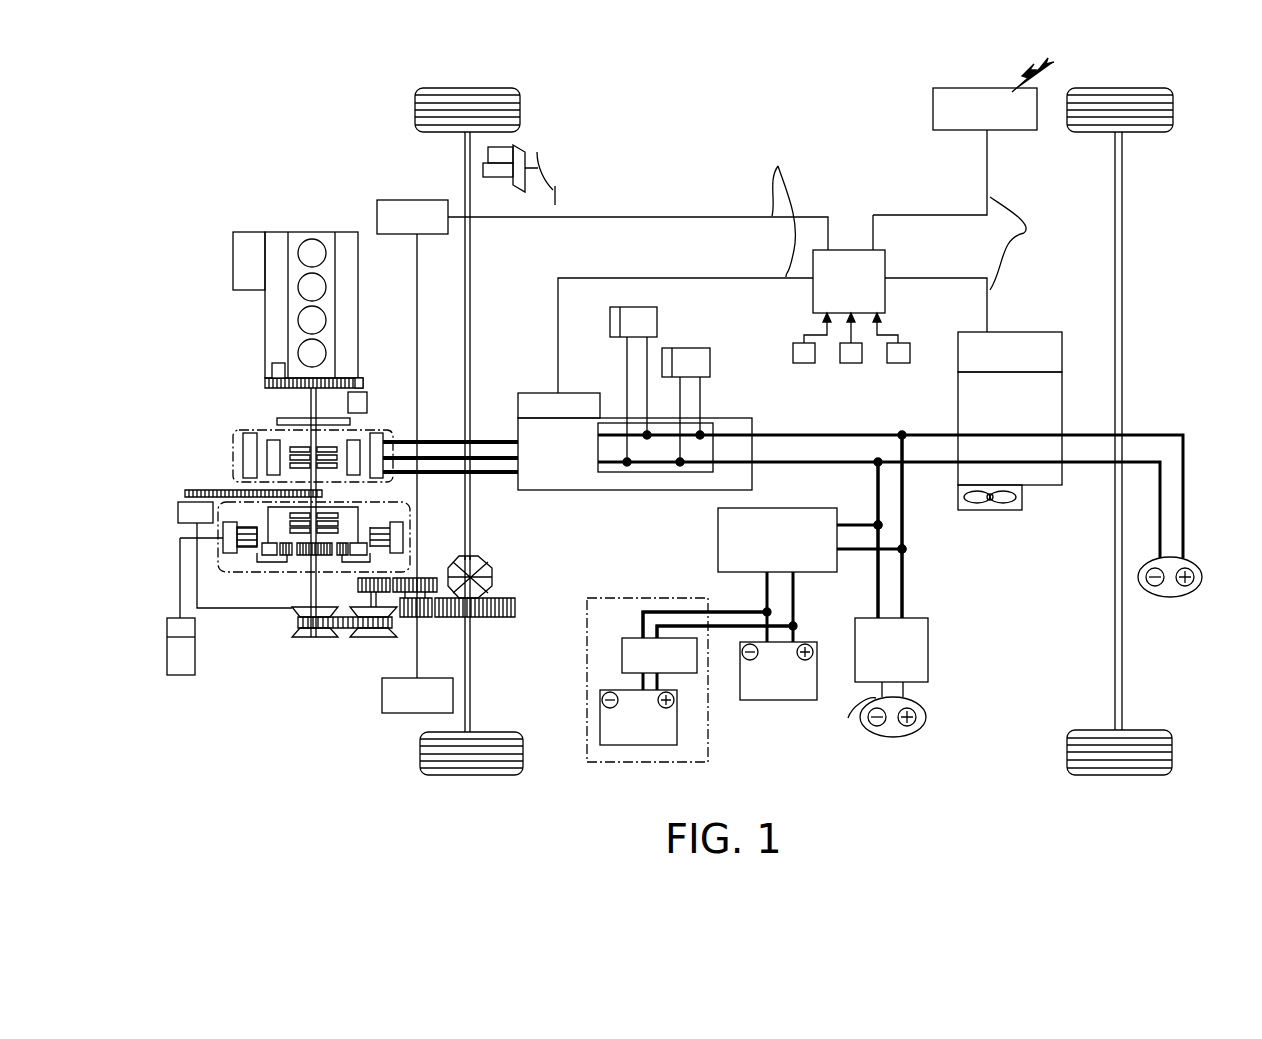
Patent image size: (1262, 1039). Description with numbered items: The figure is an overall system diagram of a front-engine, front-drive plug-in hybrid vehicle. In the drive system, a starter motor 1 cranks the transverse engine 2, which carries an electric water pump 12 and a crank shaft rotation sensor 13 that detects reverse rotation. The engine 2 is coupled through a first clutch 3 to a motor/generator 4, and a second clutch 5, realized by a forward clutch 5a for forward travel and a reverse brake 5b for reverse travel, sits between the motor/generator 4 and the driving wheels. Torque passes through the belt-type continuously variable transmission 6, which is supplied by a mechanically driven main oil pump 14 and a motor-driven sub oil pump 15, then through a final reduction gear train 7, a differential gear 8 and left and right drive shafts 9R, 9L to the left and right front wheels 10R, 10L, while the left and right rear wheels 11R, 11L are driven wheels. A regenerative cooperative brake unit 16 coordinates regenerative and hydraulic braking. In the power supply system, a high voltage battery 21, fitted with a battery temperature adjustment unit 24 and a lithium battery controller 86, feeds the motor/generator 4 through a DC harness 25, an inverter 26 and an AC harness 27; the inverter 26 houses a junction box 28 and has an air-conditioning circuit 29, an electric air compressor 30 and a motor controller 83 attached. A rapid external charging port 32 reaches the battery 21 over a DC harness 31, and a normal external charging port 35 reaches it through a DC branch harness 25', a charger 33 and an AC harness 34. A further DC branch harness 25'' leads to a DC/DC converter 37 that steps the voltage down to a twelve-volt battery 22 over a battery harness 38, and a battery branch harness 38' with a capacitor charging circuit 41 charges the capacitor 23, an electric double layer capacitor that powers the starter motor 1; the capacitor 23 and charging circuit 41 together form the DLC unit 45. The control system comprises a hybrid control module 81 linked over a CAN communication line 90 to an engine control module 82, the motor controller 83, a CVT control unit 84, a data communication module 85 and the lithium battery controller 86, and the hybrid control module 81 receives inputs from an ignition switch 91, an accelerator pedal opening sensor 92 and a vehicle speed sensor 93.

The starter motor 1 is at (365, 405).
The transverse engine 2 is at (330, 238).
The first clutch 3 is at (300, 455).
The motor/generator 4 is at (250, 455).
The second clutch 5 is at (230, 562).
The forward clutch 5a is at (330, 520).
The reverse brake 5b is at (247, 547).
The belt-type continuously variable transmission 6 is at (313, 630).
The final reduction gear train 7 is at (430, 615).
The differential gear 8 is at (480, 577).
The right drive shaft 9R is at (470, 252).
The left drive shaft 9L is at (470, 690).
The right front wheel 10R is at (415, 110).
The left front wheel 10L is at (420, 750).
The right rear wheel 11R is at (1173, 112).
The left rear wheel 11L is at (1172, 752).
The electric water pump 12 is at (240, 243).
The crank shaft rotation sensor 13 is at (272, 370).
The main oil pump 14 is at (190, 513).
The sub oil pump 15 is at (183, 655).
The regenerative cooperative brake unit 16 is at (518, 152).
The high voltage battery 21 is at (1052, 392).
The 12V battery 22 is at (752, 688).
The capacitor 23 is at (657, 735).
The battery temperature adjustment unit 24 is at (990, 505).
The DC harness 25 is at (890, 467).
The DC branch harness 25' is at (939, 526).
The DC branch harness 25'' is at (861, 540).
The inverter 26 is at (568, 474).
The AC harness 27 is at (445, 440).
The junction box 28 is at (698, 455).
The air-conditioning circuit 29 is at (690, 365).
The electric air compressor 30 is at (640, 320).
The DC harness 31 is at (1162, 432).
The rapid external charging port 32 is at (1170, 590).
The charger 33 is at (912, 670).
The AC harness 34 is at (848, 718).
The normal external charging port 35 is at (893, 727).
The DC/DC converter 37 is at (735, 555).
The battery harness 38 is at (810, 607).
The battery branch harness 38' is at (694, 602).
The capacitor charging circuit 41 is at (645, 650).
The DLC unit 45 is at (608, 762).
The hybrid control module 81 is at (850, 248).
The engine control module 82 is at (388, 200).
The motor controller 83 is at (526, 393).
The CVT control unit 84 is at (382, 700).
The data communication module 85 is at (933, 108).
The lithium battery controller 86 is at (1050, 347).
The CAN communication line 90 is at (910, 215).
The ignition switch 91 is at (804, 363).
The accelerator pedal opening sensor 92 is at (851, 363).
The brake sensor 93 is at (898, 363).